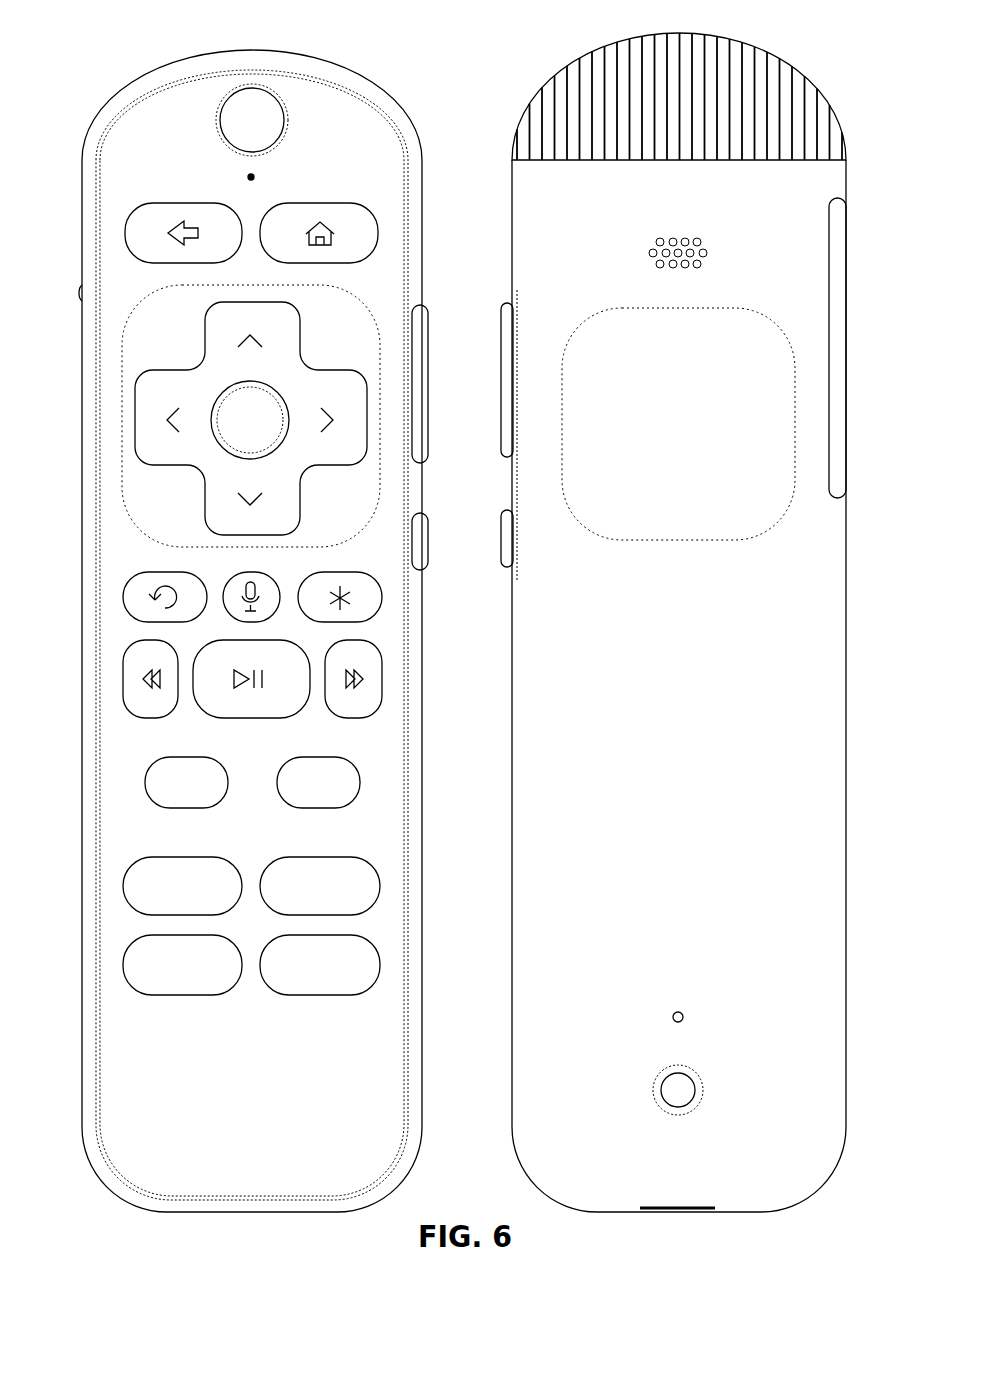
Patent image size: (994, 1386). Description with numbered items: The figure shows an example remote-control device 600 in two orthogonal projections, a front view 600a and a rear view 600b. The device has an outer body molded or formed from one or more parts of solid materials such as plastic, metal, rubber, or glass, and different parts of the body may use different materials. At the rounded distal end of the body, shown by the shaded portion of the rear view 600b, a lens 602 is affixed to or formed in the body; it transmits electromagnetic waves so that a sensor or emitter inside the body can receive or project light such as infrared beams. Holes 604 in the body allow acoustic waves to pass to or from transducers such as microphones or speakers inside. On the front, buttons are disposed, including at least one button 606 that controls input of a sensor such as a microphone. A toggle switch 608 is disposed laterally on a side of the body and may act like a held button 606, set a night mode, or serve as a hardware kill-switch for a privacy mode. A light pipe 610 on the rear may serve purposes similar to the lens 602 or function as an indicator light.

The remote-control device 600 is at (917, 5).
The front view 600a is at (251, 651).
The rear view 600b is at (587, 626).
The lens 602 is at (670, 96).
The holes 604 is at (682, 233).
The button 606 is at (223, 592).
The toggle switch 608 is at (82, 300).
The light pipe 610 is at (683, 1012).